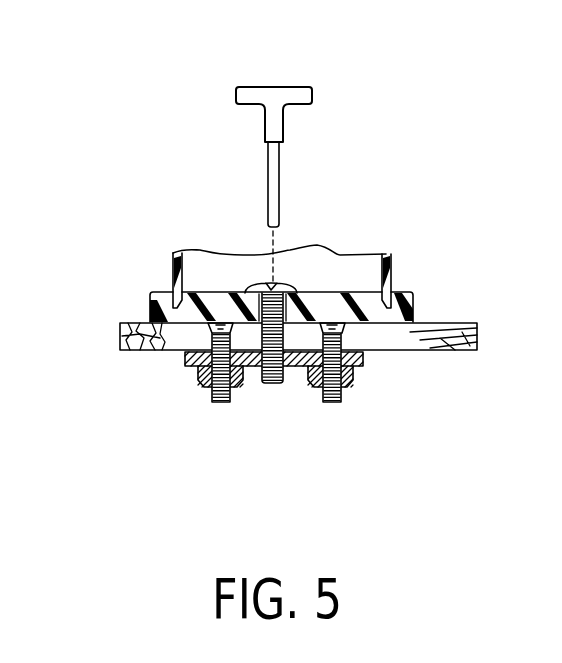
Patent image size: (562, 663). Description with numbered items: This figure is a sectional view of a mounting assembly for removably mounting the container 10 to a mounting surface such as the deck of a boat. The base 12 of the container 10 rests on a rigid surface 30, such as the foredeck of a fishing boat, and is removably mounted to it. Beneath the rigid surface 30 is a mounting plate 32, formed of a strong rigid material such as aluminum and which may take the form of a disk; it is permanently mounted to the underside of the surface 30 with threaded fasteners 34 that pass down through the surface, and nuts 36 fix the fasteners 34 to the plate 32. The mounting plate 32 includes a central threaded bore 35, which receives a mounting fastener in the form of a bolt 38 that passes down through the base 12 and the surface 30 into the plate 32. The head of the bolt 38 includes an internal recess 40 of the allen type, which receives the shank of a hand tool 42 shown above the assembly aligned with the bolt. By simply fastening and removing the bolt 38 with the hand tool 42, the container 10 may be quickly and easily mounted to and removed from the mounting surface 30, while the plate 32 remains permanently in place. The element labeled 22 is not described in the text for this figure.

The container 10 is at (176, 194).
The base 12 is at (150, 300).
The plate 22 is at (348, 272).
The rigid surface 30 is at (450, 322).
The mounting plate 32 is at (365, 355).
The threaded fasteners 34 is at (222, 403).
The central threaded bore 35 is at (262, 330).
The nuts 36 is at (205, 385).
The bolt 38 is at (272, 385).
The internal recess 40 is at (297, 247).
The hand tool 42 is at (276, 118).